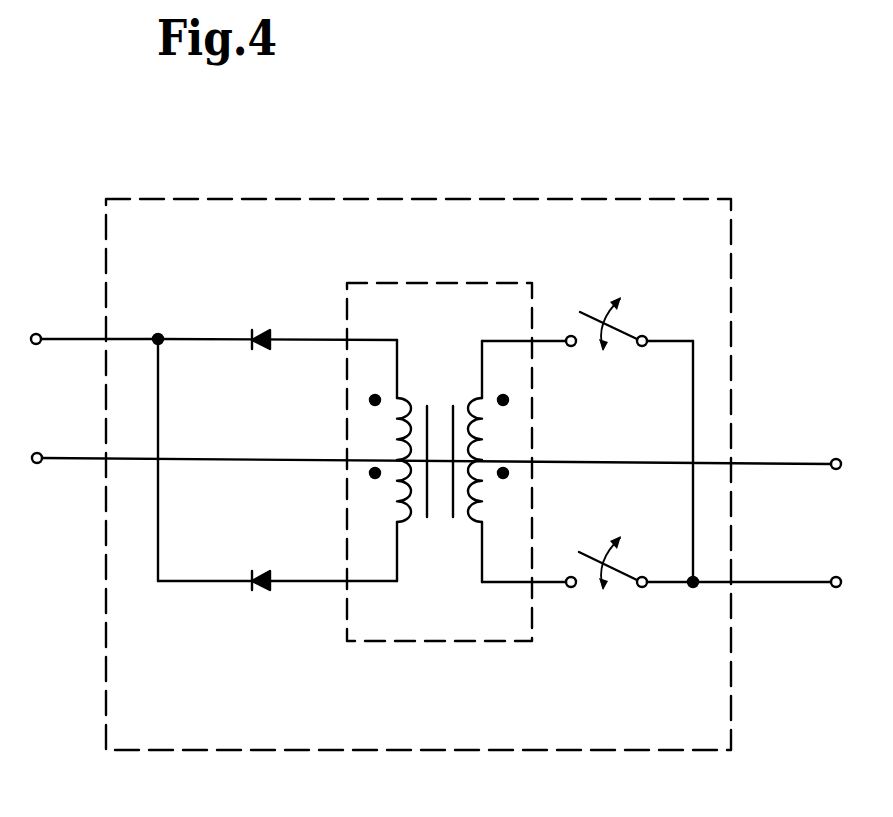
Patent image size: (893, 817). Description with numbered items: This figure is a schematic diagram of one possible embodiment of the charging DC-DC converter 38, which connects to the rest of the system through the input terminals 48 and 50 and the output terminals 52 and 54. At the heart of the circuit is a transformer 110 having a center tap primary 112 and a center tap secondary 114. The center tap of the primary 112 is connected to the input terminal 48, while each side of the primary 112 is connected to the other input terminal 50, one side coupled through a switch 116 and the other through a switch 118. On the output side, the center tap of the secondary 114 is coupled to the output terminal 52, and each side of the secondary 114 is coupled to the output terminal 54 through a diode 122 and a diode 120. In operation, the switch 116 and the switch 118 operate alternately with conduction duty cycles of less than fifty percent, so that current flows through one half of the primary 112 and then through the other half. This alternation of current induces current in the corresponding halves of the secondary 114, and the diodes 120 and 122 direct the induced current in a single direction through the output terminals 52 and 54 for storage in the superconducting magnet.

The charging DC-DC converter 38 is at (424, 204).
The input terminal 48 is at (835, 459).
The input terminal 50 is at (836, 587).
The output terminal 52 is at (40, 463).
The output terminal 54 is at (40, 335).
The transformer 110 is at (417, 433).
The center tap primary 112 is at (479, 396).
The center tap secondary 114 is at (401, 396).
The switch 116 is at (625, 330).
The switch 118 is at (617, 568).
The diode 120 is at (267, 335).
The diode 122 is at (263, 588).